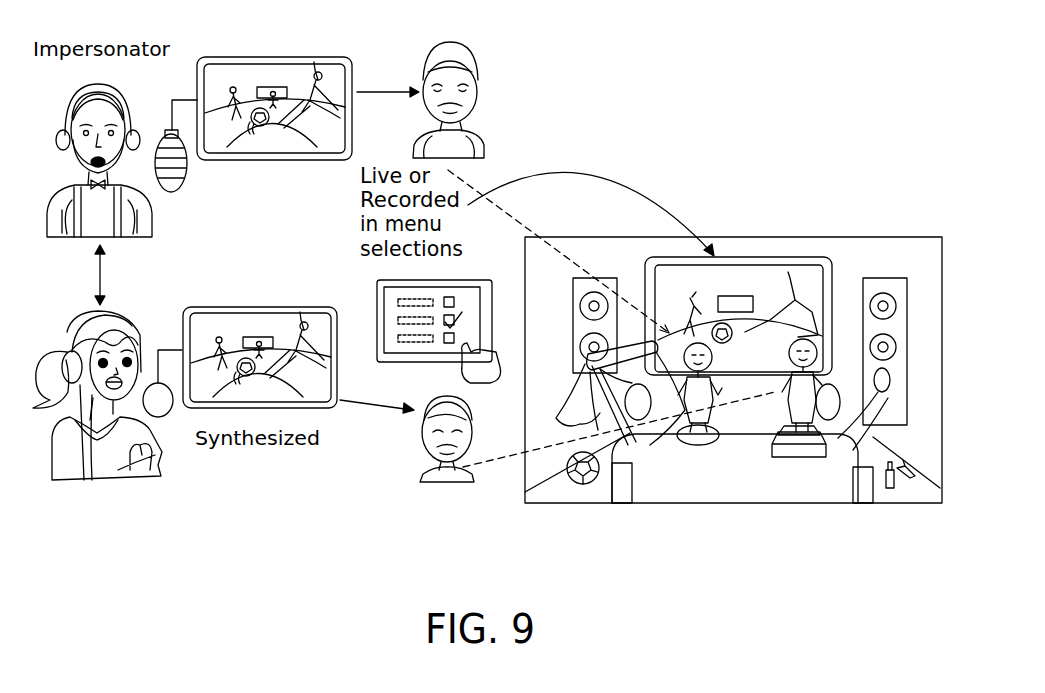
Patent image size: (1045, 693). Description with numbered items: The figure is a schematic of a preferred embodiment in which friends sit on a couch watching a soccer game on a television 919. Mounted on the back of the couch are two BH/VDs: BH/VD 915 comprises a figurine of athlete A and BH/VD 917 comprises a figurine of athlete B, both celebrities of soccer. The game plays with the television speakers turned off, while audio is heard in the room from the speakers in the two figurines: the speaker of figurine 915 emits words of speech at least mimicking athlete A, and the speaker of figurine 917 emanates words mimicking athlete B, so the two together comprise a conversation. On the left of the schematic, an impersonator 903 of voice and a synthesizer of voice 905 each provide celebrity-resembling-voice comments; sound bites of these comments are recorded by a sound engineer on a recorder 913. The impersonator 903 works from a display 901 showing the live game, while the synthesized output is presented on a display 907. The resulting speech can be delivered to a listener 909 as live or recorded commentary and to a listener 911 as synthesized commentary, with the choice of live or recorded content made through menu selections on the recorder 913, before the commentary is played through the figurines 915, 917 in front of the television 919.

The display showing live sporting event to impersonator 901 is at (266, 55).
The impersonator 903 is at (152, 228).
The synthesizer of voice 905 is at (80, 474).
The display showing synthesized content 907 is at (268, 306).
The viewer receiving live or recorded commentary 909 is at (432, 46).
The viewer receiving synthesized commentary 911 is at (432, 482).
The recorder 913 is at (377, 288).
The BH/VD 915 is at (688, 442).
The BH/VD 917 is at (795, 458).
The television display 919 is at (795, 257).